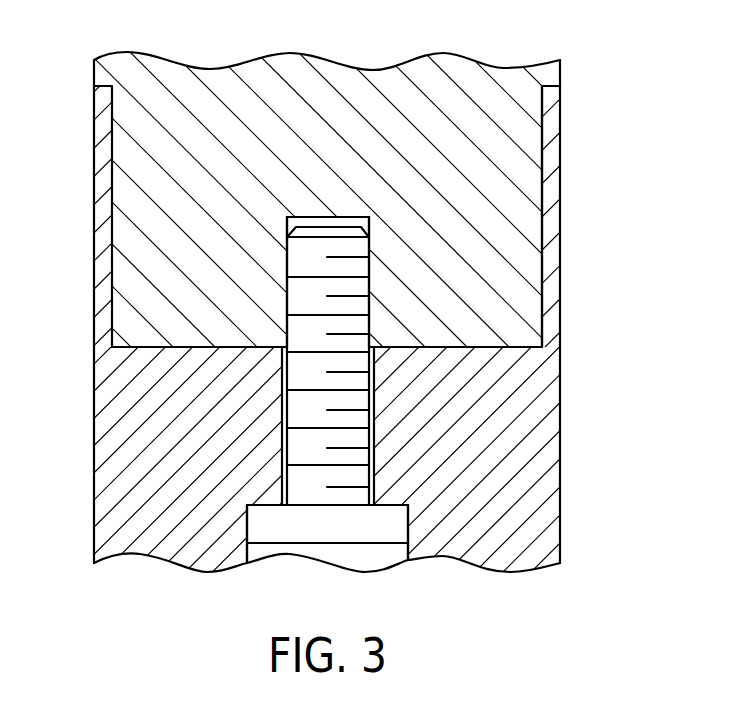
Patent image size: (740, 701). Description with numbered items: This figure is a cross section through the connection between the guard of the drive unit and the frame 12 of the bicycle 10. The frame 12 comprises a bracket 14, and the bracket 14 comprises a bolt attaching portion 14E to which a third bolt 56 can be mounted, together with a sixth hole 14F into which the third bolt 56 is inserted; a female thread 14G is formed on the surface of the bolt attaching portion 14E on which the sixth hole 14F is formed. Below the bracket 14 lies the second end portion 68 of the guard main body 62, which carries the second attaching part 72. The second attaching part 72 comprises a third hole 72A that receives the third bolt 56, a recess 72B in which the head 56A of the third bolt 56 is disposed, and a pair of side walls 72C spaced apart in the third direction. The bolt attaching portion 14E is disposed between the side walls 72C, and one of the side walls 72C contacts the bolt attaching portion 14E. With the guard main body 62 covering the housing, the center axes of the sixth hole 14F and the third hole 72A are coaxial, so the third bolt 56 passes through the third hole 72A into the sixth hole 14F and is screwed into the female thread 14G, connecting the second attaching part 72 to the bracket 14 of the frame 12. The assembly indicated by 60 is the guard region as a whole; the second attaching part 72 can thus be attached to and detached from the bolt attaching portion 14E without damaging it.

The bicycle 10 is at (370, 350).
The frame 12 is at (370, 350).
The bracket 14 is at (370, 350).
The bolt attaching portion 14E is at (173, 314).
The sixth hole 14F is at (318, 219).
The female thread 14G is at (370, 229).
The third bolt 56 is at (230, 409).
The head 56A is at (312, 545).
The fastening structure 60 is at (370, 350).
The guard main body 62 is at (94, 522).
The second end portion 68 is at (561, 117).
The second attaching part 72 is at (370, 350).
The third hole 72A is at (357, 399).
The recess 72B is at (408, 551).
The side walls 72C is at (94, 446).